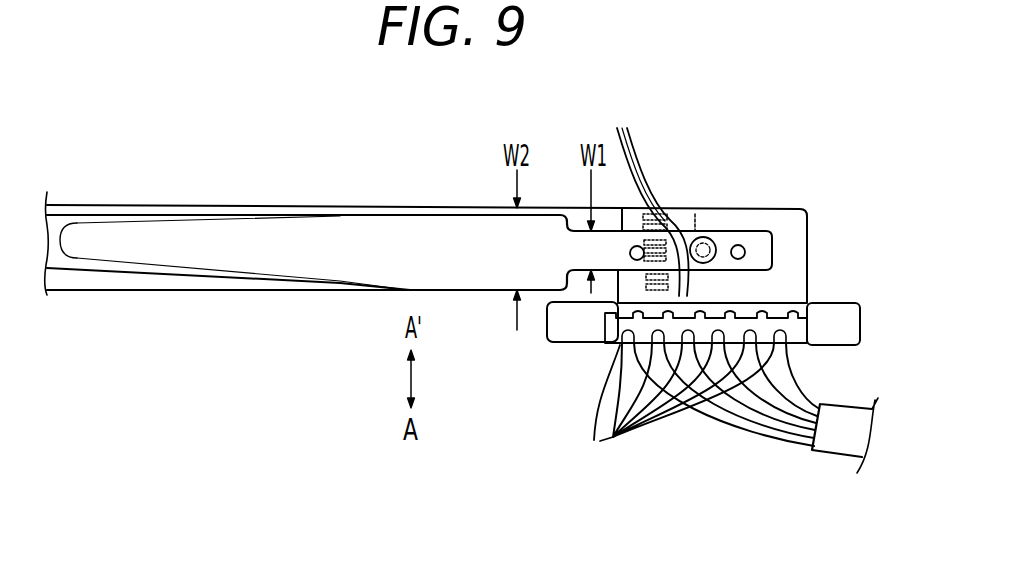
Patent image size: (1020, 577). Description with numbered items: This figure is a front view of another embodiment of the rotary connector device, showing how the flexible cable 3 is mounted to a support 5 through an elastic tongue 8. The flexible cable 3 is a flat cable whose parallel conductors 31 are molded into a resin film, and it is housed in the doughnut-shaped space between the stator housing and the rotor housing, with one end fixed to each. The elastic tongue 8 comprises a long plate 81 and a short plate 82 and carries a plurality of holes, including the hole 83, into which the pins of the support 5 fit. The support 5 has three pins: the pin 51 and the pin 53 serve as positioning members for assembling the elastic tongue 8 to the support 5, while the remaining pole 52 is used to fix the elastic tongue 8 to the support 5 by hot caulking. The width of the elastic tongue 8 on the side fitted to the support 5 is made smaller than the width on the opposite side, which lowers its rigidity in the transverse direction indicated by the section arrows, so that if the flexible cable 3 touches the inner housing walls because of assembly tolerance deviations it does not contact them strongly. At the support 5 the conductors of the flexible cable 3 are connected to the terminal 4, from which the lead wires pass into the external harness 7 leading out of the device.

The flexible cable 3 is at (80, 206).
The elastic tongue 8 is at (122, 255).
The support 5 is at (788, 221).
The parallel conductors 31 is at (651, 196).
The short plate 82 is at (676, 233).
The hole 83 is at (728, 243).
The pole 52 is at (702, 242).
The pin 53 is at (739, 246).
The pin 51 is at (636, 261).
The long plate 81 is at (628, 260).
The terminal 4 is at (684, 406).
The external harness 7 is at (786, 443).